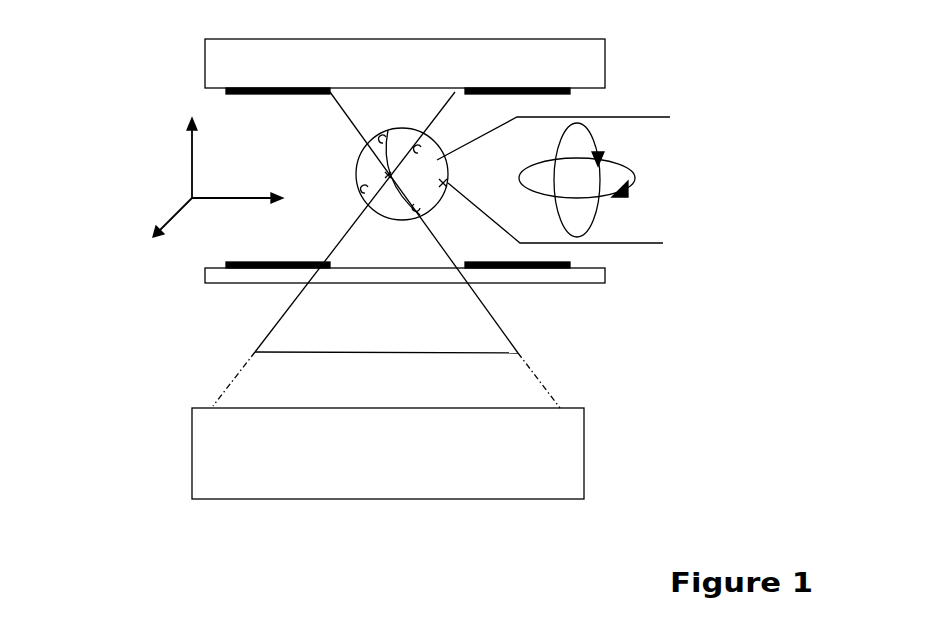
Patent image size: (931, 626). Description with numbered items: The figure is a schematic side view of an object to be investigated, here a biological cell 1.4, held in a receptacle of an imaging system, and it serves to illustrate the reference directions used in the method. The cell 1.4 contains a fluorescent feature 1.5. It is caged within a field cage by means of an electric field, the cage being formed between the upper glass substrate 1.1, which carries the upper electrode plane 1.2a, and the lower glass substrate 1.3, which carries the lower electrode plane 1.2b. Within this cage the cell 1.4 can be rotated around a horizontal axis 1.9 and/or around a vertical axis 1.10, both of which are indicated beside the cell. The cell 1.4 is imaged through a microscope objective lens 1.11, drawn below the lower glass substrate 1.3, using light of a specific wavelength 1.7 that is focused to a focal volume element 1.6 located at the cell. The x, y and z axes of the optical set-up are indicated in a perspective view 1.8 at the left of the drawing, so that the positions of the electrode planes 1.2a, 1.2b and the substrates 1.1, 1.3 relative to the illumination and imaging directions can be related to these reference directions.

The upper glass substrate 1.1 is at (597, 53).
The upper electrode plane 1.2a is at (570, 96).
The lower electrode plane 1.2b is at (570, 264).
The lower glass substrate 1.3 is at (476, 301).
The cell 1.4 is at (588, 132).
The fluorescent feature 1.5 is at (596, 216).
The focal volume element 1.6 is at (392, 175).
The light of a specific wavelength 1.7 is at (317, 331).
The x, y and z axes 1.8 is at (192, 148).
The horizontal axis 1.9 is at (647, 180).
The vertical axis 1.10 is at (635, 180).
The microscope objective lens 1.11 is at (553, 457).